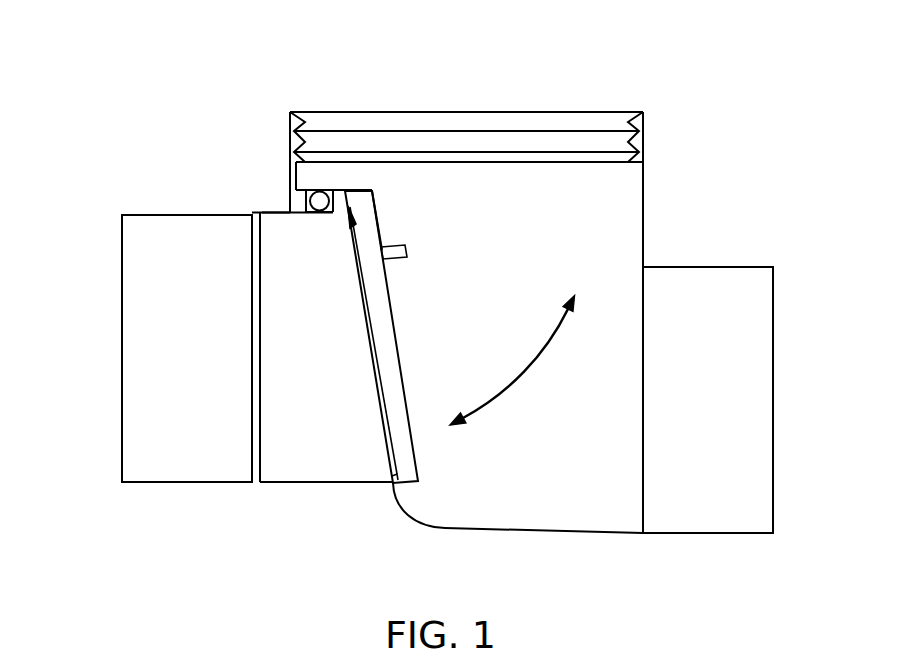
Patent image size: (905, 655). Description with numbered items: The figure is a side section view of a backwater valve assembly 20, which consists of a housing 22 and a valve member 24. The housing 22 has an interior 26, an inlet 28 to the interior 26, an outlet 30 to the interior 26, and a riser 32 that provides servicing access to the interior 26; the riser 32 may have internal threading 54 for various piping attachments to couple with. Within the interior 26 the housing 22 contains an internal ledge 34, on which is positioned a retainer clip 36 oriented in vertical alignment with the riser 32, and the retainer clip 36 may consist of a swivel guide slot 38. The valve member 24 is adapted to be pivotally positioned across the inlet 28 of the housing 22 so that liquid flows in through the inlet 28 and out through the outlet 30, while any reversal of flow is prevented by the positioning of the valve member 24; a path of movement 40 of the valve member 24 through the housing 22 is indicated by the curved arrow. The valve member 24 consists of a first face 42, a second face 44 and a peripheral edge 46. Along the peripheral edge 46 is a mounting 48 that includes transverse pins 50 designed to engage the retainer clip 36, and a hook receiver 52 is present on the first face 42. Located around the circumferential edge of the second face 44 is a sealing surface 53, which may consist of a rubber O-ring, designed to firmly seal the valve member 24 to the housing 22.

The backwater valve assembly 20 is at (429, 327).
The housing 22 is at (643, 203).
The valve member 24 is at (400, 412).
The interior 26 is at (584, 518).
The inlet 28 is at (172, 482).
The outlet 30 is at (717, 533).
The riser 32 is at (643, 174).
The internal ledge 34 is at (337, 192).
The retainer clip 36 is at (309, 213).
The swivel guide slot 38 is at (328, 209).
The path of movement 40 is at (555, 345).
The first face 42 is at (380, 218).
The second face 44 is at (379, 372).
The peripheral edge 46 is at (350, 192).
The mounting 48 is at (290, 191).
The transverse pins 50 is at (311, 203).
The hook receiver 52 is at (408, 252).
The sealing surface 53 is at (393, 483).
The internal threading 54 is at (632, 133).